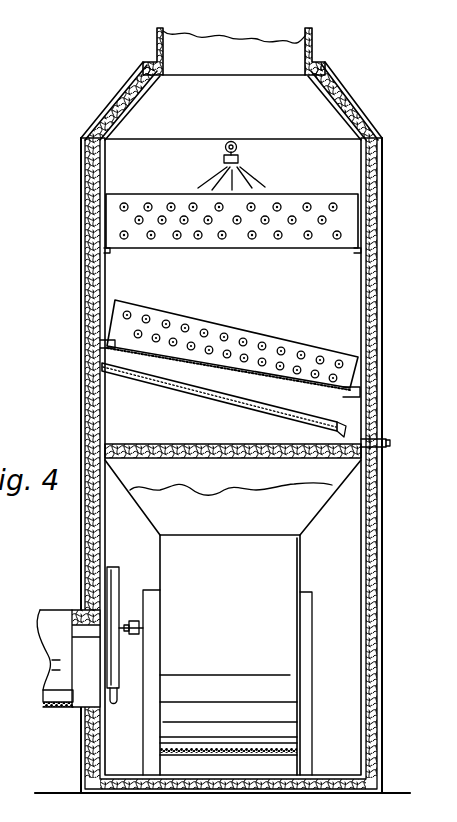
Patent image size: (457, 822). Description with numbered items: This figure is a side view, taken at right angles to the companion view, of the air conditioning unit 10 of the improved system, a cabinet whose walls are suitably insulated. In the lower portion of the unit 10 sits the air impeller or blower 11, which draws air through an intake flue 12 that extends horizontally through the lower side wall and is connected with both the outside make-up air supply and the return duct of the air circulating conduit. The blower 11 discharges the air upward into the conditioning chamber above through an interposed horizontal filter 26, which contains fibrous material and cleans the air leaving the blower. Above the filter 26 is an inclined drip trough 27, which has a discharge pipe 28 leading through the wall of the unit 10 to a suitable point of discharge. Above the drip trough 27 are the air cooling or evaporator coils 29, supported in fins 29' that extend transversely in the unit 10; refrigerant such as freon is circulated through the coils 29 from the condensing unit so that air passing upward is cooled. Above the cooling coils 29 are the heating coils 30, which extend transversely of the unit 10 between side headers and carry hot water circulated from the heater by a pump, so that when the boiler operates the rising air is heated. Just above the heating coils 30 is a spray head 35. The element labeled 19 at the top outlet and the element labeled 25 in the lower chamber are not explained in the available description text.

The air conditioning unit 10 is at (373, 289).
The outlet neck 19 is at (312, 43).
The spray head 35 is at (238, 150).
The heating coils 30 is at (150, 203).
The air cooling or evaporator coils 29 is at (230, 344).
The fins 29' is at (233, 337).
The inclined drip trough 27 is at (182, 396).
The horizontal filter 26 is at (248, 459).
The discharge pipe 28 is at (388, 442).
The hopper funnel 25 is at (304, 505).
The air impeller or blower 11 is at (280, 562).
The intake flue 12 is at (56, 617).